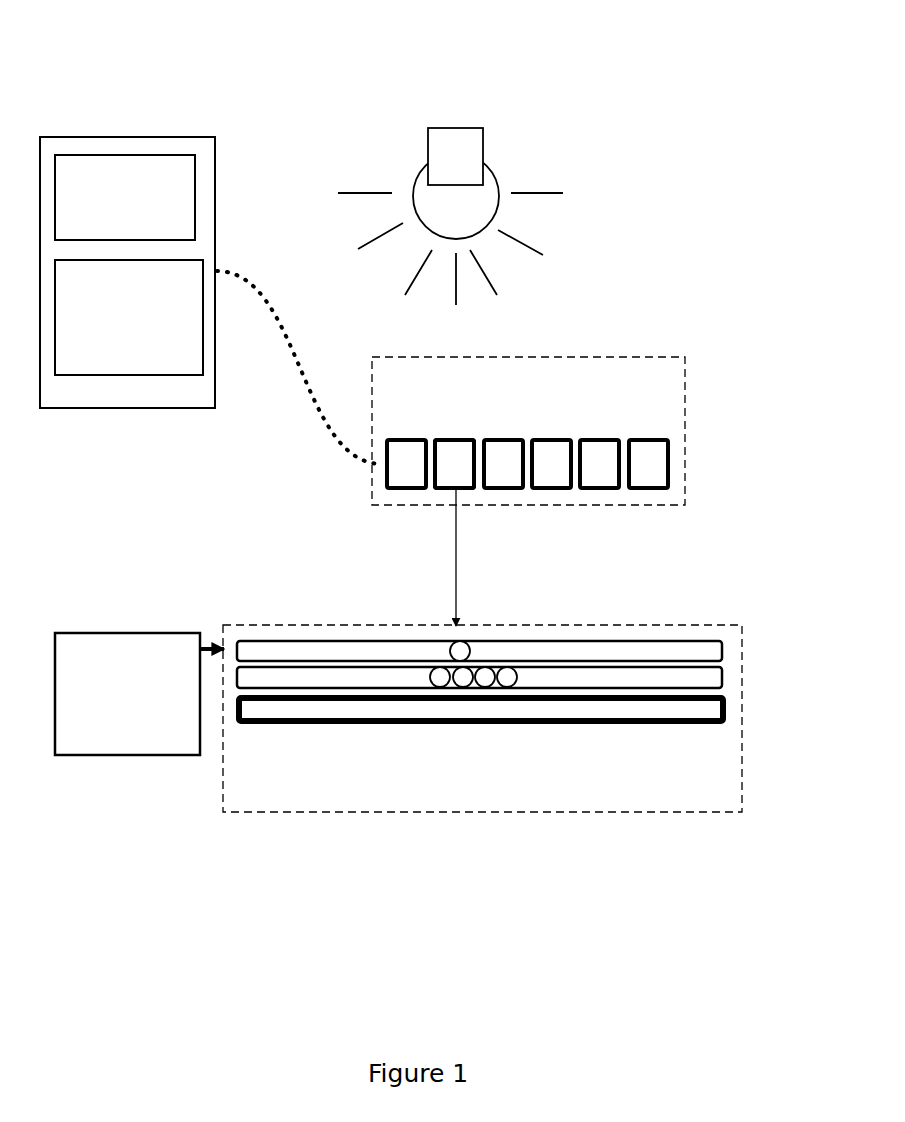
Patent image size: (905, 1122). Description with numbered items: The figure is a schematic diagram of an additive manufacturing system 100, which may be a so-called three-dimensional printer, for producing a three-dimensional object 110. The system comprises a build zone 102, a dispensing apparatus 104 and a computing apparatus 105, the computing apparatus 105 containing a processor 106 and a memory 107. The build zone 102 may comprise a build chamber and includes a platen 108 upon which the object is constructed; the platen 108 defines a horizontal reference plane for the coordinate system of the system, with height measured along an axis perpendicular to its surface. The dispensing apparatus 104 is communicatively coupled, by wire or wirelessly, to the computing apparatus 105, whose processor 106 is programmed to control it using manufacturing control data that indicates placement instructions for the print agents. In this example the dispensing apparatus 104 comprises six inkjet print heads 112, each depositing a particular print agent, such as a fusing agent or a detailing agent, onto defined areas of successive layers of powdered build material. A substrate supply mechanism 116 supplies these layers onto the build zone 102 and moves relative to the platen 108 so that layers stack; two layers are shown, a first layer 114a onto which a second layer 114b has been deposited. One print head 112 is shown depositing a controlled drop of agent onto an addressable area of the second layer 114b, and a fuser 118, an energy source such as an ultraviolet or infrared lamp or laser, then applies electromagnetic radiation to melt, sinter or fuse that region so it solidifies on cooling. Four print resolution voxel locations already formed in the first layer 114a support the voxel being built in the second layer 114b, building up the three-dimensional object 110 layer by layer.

The additive manufacturing system 100 is at (487, 934).
The build zone 102 is at (482, 718).
The dispensing apparatus 104 is at (528, 431).
The computing apparatus 105 is at (101, 130).
The processor 106 is at (125, 197).
The memory 107 is at (129, 317).
The platen 108 is at (319, 729).
The three-dimensional object 110 is at (440, 650).
The inkjet print head 112 is at (474, 496).
The first layer 114a is at (727, 674).
The second layer 114b is at (727, 644).
The substrate supply mechanism 116 is at (139, 694).
The fuser 118 is at (398, 159).